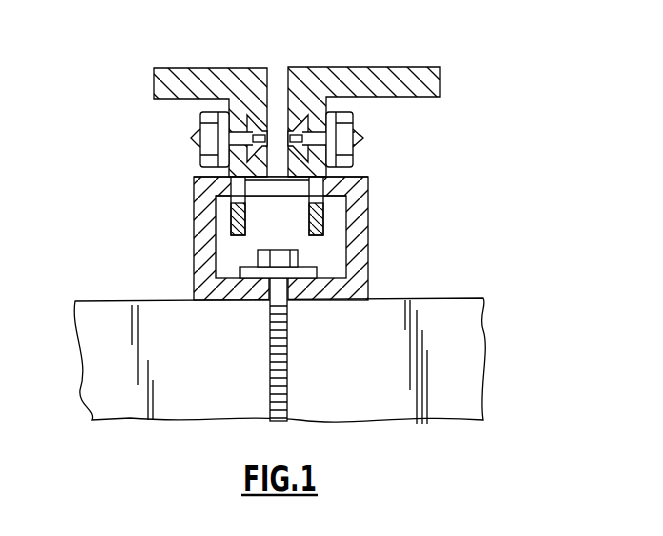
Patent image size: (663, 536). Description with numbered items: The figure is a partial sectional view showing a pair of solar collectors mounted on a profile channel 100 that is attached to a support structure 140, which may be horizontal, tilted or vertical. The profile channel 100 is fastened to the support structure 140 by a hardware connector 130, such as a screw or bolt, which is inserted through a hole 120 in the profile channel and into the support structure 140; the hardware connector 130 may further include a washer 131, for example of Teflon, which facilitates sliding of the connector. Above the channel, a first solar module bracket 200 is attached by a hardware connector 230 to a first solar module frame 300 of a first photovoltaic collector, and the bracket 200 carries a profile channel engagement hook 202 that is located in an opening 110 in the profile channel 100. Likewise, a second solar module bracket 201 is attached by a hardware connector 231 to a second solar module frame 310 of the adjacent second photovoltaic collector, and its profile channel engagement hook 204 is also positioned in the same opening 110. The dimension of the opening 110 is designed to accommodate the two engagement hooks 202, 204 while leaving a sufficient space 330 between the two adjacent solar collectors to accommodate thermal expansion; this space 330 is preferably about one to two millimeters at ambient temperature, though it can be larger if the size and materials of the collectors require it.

The profile channel 100 is at (374, 276).
The opening 110 is at (288, 206).
The hole 120 is at (262, 308).
The hardware connector 130 is at (248, 259).
The washer 131 is at (304, 285).
The support structure 140 is at (470, 372).
The first solar module bracket 200 is at (214, 212).
The second solar module bracket 201 is at (349, 212).
The profile channel engagement hook 202 is at (214, 231).
The profile channel engagement hook 204 is at (349, 230).
The hardware connector 230 is at (186, 137).
The hardware connector 231 is at (370, 137).
The first solar module frame 300 is at (150, 79).
The second solar module frame 310 is at (421, 73).
The space 330 is at (277, 66).